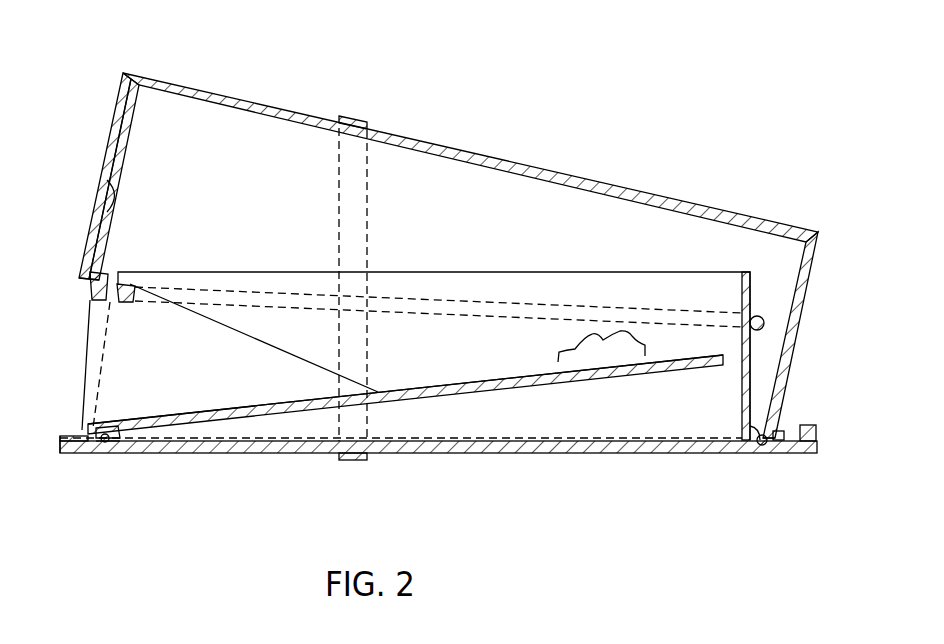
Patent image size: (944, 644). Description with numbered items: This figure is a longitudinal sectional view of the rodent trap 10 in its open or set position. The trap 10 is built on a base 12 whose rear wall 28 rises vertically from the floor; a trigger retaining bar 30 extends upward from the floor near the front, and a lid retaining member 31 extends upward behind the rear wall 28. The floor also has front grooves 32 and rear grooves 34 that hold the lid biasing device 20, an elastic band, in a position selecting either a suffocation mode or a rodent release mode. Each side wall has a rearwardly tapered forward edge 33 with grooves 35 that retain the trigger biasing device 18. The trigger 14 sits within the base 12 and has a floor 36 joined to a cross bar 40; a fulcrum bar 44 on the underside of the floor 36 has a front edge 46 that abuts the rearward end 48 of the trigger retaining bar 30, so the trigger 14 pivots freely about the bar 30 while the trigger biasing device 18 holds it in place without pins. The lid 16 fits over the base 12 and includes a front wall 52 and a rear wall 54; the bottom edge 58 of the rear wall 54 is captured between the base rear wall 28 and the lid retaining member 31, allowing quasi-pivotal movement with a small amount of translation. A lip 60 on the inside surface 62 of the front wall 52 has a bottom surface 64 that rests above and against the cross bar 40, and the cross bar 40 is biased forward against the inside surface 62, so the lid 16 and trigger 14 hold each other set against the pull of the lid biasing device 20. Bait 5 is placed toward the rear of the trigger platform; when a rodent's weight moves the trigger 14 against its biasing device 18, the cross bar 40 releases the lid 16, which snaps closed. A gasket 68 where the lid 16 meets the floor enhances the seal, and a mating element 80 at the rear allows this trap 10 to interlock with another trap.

The rodent trap 10 is at (632, 134).
The base 12 is at (243, 453).
The trigger 14 is at (287, 402).
The lid 16 is at (728, 211).
The trigger biasing device 18 is at (763, 317).
The lid biasing device 20 is at (356, 118).
The rear wall 28 is at (755, 373).
The trigger retaining bar 30 is at (88, 448).
The lid retaining member 31 is at (783, 432).
The front grooves 32 is at (367, 457).
The forward edge 33 is at (108, 328).
The rear grooves 34 is at (492, 453).
The grooves 35 is at (128, 284).
The floor 36 is at (500, 379).
The cross bar 40 is at (91, 286).
The fulcrum bar 44 is at (114, 427).
The front edge 46 is at (116, 446).
The rearward end 48 is at (105, 445).
The front wall 52 is at (121, 82).
The rear wall 54 is at (818, 252).
The bottom edge 58 is at (761, 446).
The lip 60 is at (118, 136).
The inside surface 62 is at (103, 196).
The bottom surface 64 is at (88, 268).
The gasket 68 is at (753, 433).
The mating element 80 is at (816, 445).
The bait 5 is at (646, 345).